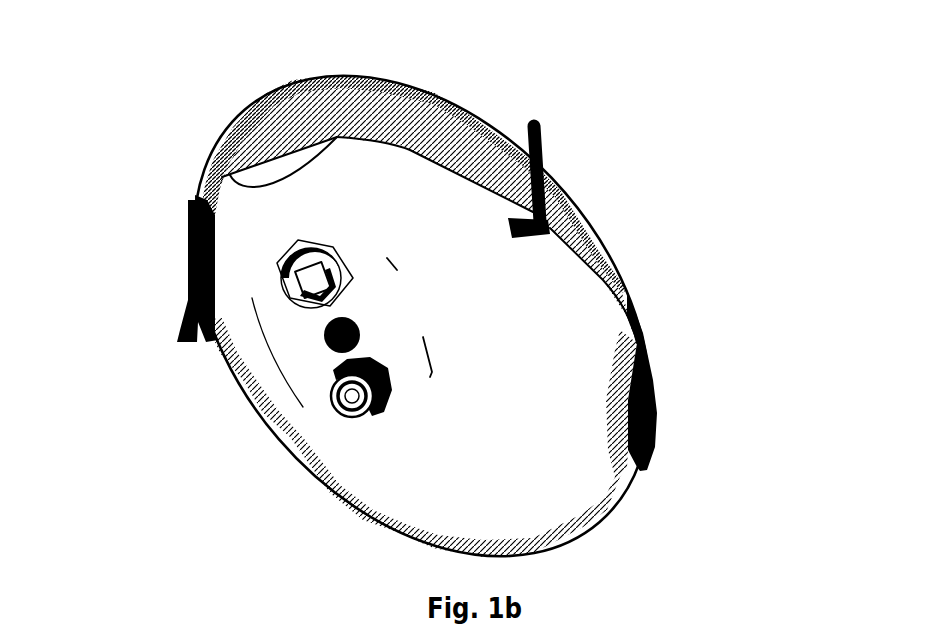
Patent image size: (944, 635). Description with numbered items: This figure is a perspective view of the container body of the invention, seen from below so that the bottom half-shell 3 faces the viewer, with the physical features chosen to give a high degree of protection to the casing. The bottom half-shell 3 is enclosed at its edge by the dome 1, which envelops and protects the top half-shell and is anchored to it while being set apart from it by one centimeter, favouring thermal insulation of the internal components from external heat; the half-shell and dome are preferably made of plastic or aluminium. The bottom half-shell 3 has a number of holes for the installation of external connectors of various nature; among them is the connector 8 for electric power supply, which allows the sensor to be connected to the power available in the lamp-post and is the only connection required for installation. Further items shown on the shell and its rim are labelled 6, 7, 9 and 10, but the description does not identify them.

The dome 1 is at (430, 113).
The bottom half-shell 3 is at (563, 432).
The bracket 6 is at (543, 175).
The handle 7 is at (177, 295).
The connector for electric power supply 8 is at (340, 412).
The opening 9 is at (325, 348).
The hexagonal valve nut 10 is at (280, 298).